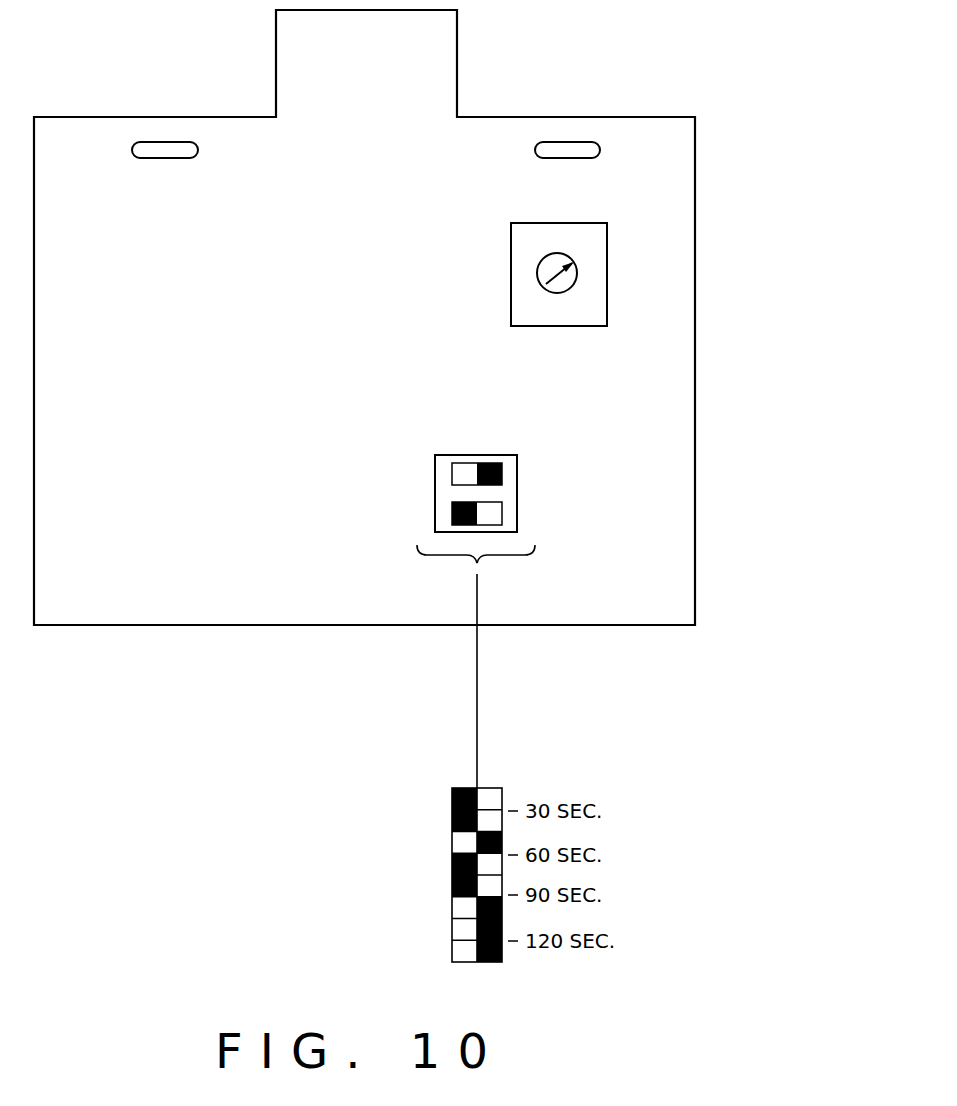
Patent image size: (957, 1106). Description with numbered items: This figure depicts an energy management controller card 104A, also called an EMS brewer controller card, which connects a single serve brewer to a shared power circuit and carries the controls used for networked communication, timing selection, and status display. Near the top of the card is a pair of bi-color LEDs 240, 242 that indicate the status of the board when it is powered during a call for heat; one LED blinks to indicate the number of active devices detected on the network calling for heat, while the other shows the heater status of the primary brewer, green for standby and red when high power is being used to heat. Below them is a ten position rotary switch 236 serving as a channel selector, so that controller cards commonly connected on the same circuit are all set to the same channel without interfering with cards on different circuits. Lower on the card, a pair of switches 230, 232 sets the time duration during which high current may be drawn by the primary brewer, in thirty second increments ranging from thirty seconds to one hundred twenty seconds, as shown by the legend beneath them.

The energy management controller card 104A is at (528, 110).
The bi-color LED 240 is at (170, 142).
The bi-color LED 242 is at (567, 160).
The ten position rotary switch 236 is at (610, 272).
The switch 230 is at (518, 472).
The switch 232 is at (518, 513).